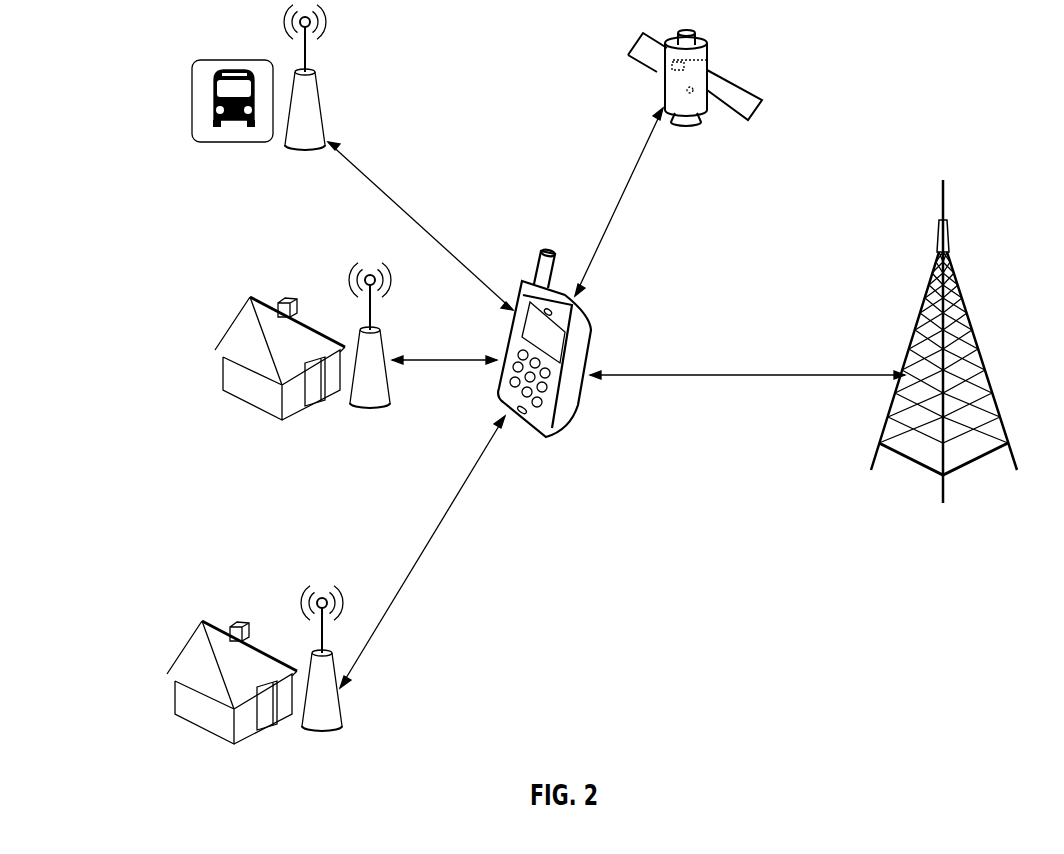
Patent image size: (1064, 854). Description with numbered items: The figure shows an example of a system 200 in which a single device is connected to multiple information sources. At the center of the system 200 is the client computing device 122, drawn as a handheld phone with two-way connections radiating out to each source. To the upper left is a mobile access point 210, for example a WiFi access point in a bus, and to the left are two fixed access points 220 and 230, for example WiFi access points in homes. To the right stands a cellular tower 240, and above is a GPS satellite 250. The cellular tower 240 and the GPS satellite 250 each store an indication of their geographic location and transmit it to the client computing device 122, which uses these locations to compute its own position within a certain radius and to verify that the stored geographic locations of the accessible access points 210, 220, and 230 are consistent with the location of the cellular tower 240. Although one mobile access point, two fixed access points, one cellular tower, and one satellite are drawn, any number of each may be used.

The system 200 is at (550, 30).
The mobile access point 210 is at (220, 77).
The fixed access point 220 is at (270, 341).
The fixed access point 230 is at (221, 665).
The cellular tower 240 is at (944, 370).
The GPS satellite 250 is at (720, 78).
The client computing device 122 is at (551, 402).